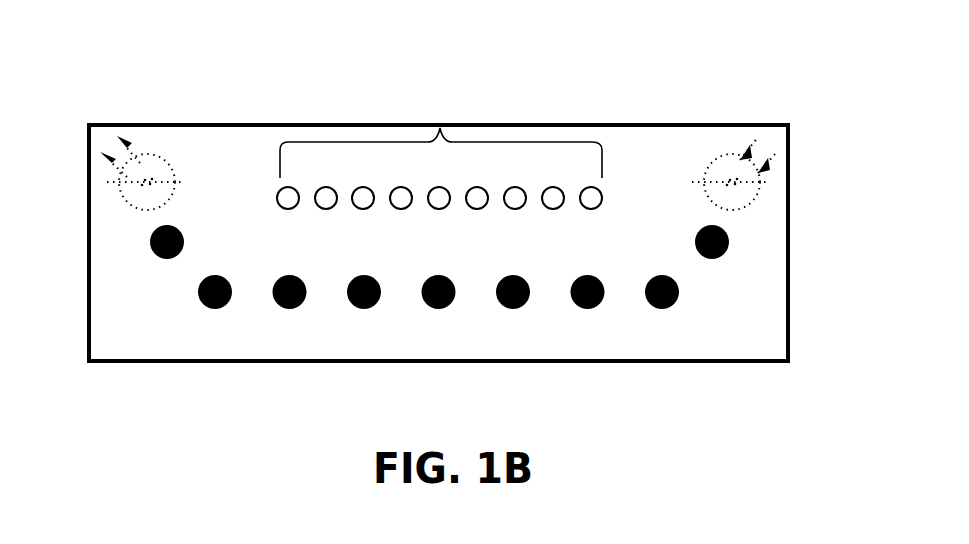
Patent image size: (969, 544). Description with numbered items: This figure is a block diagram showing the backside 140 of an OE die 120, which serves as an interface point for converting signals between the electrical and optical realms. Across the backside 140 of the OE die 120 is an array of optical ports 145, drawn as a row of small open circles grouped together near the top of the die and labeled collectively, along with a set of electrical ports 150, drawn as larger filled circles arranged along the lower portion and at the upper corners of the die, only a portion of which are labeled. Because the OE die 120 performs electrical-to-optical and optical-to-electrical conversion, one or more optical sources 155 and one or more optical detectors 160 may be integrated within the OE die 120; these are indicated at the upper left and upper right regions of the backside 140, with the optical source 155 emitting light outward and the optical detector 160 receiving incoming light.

The backside 140 is at (172, 89).
The OE die 120 is at (670, 125).
The array of optical ports 145 is at (440, 128).
The electrical ports 150 is at (209, 308).
The optical source 155 is at (121, 193).
The optical detector 160 is at (758, 190).